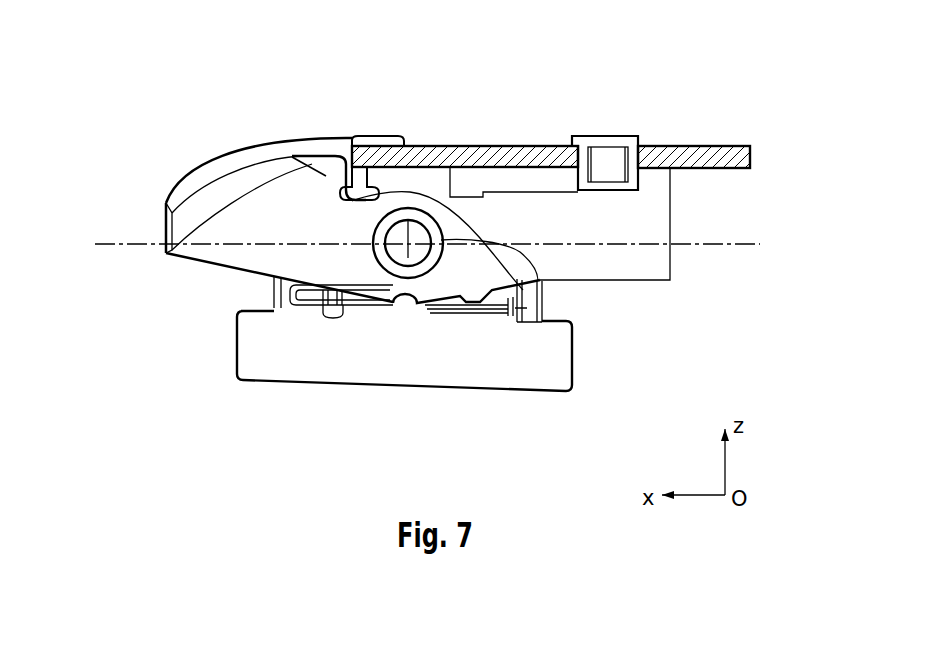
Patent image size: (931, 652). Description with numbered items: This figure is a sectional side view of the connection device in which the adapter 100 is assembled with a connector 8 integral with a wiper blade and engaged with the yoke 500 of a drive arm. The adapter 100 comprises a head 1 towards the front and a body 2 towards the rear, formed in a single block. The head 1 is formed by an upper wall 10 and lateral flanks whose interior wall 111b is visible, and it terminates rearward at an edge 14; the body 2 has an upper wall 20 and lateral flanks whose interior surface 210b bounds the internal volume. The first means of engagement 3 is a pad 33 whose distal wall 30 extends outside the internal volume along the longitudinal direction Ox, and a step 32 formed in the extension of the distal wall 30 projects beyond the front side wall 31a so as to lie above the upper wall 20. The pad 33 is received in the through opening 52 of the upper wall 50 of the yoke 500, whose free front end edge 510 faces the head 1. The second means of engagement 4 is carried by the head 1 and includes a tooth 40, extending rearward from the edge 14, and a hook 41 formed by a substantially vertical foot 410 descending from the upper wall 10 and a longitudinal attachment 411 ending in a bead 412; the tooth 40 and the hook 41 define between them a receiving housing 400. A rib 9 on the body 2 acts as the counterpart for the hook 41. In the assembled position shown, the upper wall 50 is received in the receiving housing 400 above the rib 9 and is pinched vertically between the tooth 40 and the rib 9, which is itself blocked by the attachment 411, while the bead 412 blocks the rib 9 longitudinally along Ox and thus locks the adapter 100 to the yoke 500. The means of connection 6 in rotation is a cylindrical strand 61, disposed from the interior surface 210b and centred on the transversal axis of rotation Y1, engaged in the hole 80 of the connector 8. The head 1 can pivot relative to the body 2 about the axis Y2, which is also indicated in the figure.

The head 1 is at (178, 172).
The body 2 is at (635, 292).
The first means of engagement 3 is at (648, 122).
The second means of engagement 4 is at (335, 212).
The means of connection in rotation 6 is at (378, 279).
The connector 8 is at (256, 333).
The rib 9 is at (343, 185).
The upper wall of the head 10 is at (220, 163).
The edge of the head 14 is at (346, 150).
The upper wall of the body 20 is at (500, 176).
The distal wall 30 is at (615, 134).
The front side wall 31a is at (578, 160).
The step 32 is at (584, 136).
The pad 33 is at (619, 176).
The tooth 40 is at (392, 143).
The hook 41 is at (272, 163).
The upper wall of the yoke 50 is at (524, 160).
The through opening 52 is at (705, 150).
The cylindrical strand 61 is at (412, 248).
The hole 80 is at (540, 285).
The adapter 100 is at (683, 210).
The interior wall 111b is at (260, 239).
The interior surface 210b is at (655, 239).
The receiving housing 400 is at (374, 146).
The foot 410 is at (334, 178).
The attachment 411 is at (430, 224).
The bead 412 is at (373, 190).
The yoke 500 is at (720, 180).
The free front end edge 510 is at (357, 146).
The longitudinal direction Ox is at (136, 246).
The transversal axis of rotation Y1 is at (395, 262).
The pivot axis Y2 is at (331, 308).